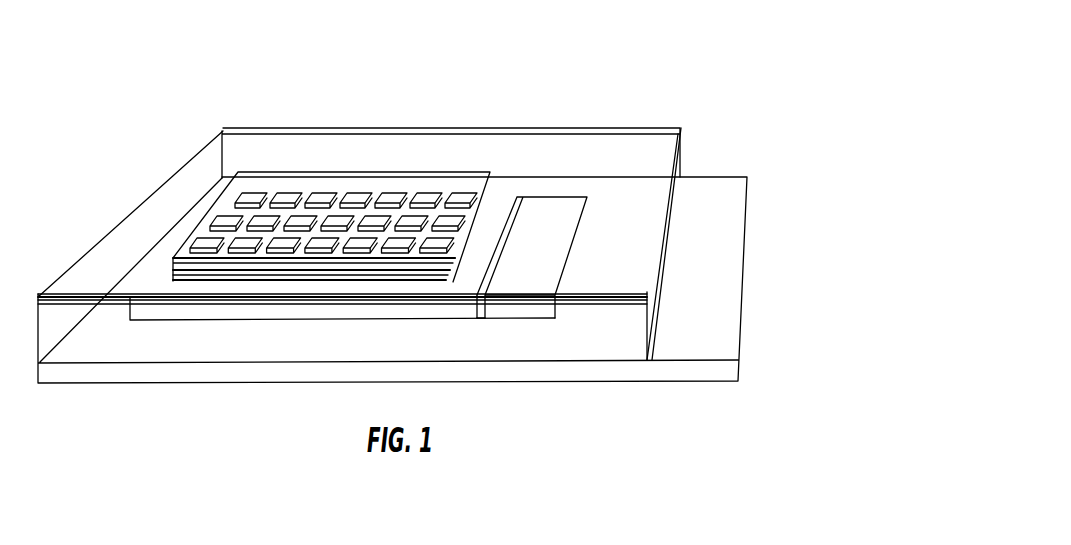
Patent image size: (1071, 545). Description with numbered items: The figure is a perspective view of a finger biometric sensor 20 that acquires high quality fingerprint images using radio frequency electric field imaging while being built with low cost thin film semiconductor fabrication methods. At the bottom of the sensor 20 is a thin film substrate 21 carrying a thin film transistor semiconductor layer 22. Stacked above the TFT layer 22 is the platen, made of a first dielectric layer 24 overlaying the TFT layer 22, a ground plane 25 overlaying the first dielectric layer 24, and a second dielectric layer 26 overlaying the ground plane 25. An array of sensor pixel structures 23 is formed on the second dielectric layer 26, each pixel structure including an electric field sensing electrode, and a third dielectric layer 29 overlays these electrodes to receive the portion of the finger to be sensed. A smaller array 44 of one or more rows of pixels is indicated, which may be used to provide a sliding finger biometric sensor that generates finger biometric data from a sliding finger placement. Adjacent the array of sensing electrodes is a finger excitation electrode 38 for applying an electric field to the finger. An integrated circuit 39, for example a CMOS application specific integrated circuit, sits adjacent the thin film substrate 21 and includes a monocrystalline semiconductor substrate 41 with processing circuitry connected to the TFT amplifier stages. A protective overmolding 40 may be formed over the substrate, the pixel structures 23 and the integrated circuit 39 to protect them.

The finger biometric sensor 20 is at (437, 230).
The thin film substrate 21 is at (312, 377).
The thin film transistor (TFT) semiconductor layer 22 is at (223, 313).
The sensor pixel structures 23 is at (428, 197).
The first dielectric layer 24 is at (173, 278).
The ground plane 25 is at (173, 272).
The second dielectric layer 26 is at (172, 265).
The third dielectric layer 29 is at (173, 245).
The finger excitation electrode 38 is at (650, 250).
The integrated circuit (IC) 39 is at (502, 333).
The protective overmolding 40 is at (653, 317).
The monocrystalline semiconductor substrate 41 is at (538, 312).
The smaller array 44 is at (273, 175).